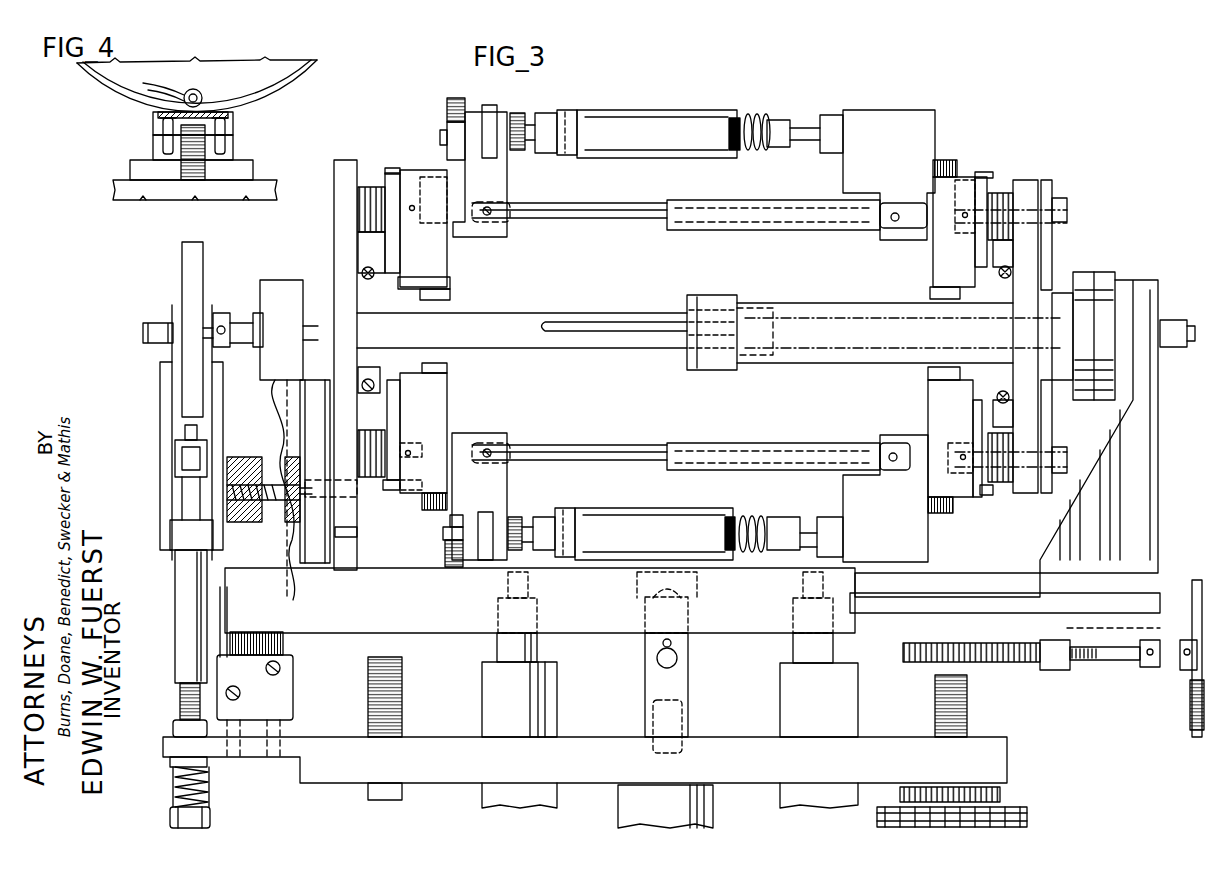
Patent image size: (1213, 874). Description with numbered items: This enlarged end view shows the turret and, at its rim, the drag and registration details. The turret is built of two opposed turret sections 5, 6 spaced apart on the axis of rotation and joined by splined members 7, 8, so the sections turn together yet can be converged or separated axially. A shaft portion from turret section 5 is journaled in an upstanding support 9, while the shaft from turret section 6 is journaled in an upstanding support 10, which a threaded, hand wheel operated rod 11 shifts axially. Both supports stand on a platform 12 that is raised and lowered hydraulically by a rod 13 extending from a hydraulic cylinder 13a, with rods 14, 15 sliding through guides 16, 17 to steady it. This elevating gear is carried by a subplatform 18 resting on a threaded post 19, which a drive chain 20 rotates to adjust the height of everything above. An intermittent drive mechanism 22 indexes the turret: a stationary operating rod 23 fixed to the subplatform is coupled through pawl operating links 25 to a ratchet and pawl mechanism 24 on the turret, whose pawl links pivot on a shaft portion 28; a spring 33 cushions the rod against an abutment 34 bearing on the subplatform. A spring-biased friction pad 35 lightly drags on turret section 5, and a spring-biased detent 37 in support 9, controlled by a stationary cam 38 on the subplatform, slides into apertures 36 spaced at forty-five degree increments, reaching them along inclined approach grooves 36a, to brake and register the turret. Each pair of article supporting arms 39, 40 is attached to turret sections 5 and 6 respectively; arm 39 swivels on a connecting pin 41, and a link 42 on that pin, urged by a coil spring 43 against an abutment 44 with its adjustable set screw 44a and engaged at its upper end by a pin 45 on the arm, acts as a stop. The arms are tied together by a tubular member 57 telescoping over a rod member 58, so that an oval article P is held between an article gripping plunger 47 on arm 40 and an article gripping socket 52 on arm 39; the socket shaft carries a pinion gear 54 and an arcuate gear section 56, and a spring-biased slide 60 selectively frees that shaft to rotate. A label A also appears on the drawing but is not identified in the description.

In FIG. 4, the turret section 5 is at (250, 89).
In FIG. 3, the turret section 5 is at (346, 165).
In FIG. 3, the turret section 6 is at (1025, 182).
In FIG. 3, the splined member 7 is at (600, 314).
In FIG. 3, the splined member 8 is at (818, 303).
In FIG. 3, the upstanding support 9 is at (287, 290).
In FIG. 3, the upstanding support 10 is at (1128, 288).
In FIG. 3, the threaded and hand wheel operated rod 11 is at (1010, 660).
In FIG. 3, the platform 12 is at (855, 590).
In FIG. 3, the rod 13 is at (645, 658).
In FIG. 3, the hydraulic cylinder 13a is at (632, 810).
In FIG. 3, the rod 14 is at (505, 645).
In FIG. 3, the rod 15 is at (800, 645).
In FIG. 3, the guide 16 is at (493, 688).
In FIG. 3, the guide 17 is at (793, 688).
In FIG. 3, the subplatform 18 is at (1003, 758).
In FIG. 3, the threaded post 19 is at (368, 680).
In FIG. 3, the drive chain 20 is at (1012, 810).
In FIG. 3, the intermittent drive mechanism 22 is at (150, 421).
In FIG. 3, the stationary operating rod 23 is at (182, 572).
In FIG. 3, the ratchet and pawl mechanism 24 is at (185, 257).
In FIG. 3, the pawl operating links 25 is at (160, 383).
In FIG. 3, the shaft portion 28 is at (145, 328).
In FIG. 3, the spring 33 is at (172, 790).
In FIG. 3, the abutment 34 is at (172, 728).
In FIG. 4, the spring-biased friction pad 35 is at (233, 117).
In FIG. 3, the spring-biased friction pad 35 is at (347, 532).
In FIG. 4, the apertures 36 is at (160, 109).
In FIG. 3, the apertures 36 is at (345, 497).
In FIG. 4, the inclined approach grooves 36a is at (150, 97).
In FIG. 3, the spring-biased detent 37 is at (325, 507).
In FIG. 3, the stationary cam 38 is at (277, 410).
In FIG. 3, the arm 39 is at (437, 176).
In FIG. 3, the arm 40 is at (940, 258).
In FIG. 3, the connecting pin 41 is at (443, 447).
In FIG. 3, the link 42 is at (398, 240).
In FIG. 3, the coil spring 43 is at (357, 200).
In FIG. 3, the abutment 44 is at (367, 258).
In FIG. 3, the adjustable set screw 44a is at (375, 279).
In FIG. 3, the pin 45 is at (392, 170).
In FIG. 3, the article gripping plunger 47 is at (772, 118).
In FIG. 3, the article gripping socket 52 is at (565, 110).
In FIG. 3, the pinion gear 54 is at (517, 113).
In FIG. 3, the arcuate gear section 56 is at (455, 100).
In FIG. 3, the tubular member 57 is at (778, 210).
In FIG. 3, the rod member 58 is at (600, 204).
In FIG. 3, the spring-biased slide 60 is at (489, 108).
In FIG. 3, the cylinder A is at (682, 92).
In FIG. 3, the article P is at (687, 158).